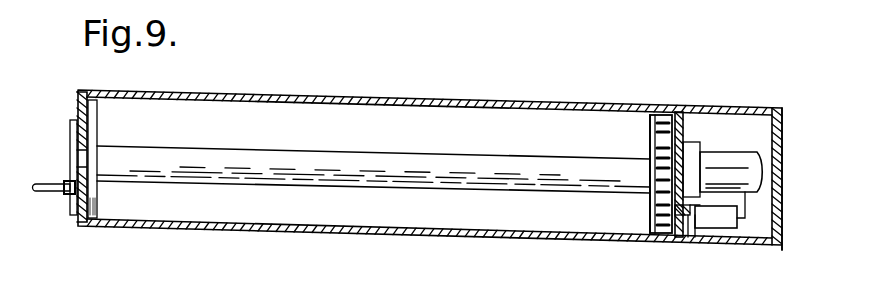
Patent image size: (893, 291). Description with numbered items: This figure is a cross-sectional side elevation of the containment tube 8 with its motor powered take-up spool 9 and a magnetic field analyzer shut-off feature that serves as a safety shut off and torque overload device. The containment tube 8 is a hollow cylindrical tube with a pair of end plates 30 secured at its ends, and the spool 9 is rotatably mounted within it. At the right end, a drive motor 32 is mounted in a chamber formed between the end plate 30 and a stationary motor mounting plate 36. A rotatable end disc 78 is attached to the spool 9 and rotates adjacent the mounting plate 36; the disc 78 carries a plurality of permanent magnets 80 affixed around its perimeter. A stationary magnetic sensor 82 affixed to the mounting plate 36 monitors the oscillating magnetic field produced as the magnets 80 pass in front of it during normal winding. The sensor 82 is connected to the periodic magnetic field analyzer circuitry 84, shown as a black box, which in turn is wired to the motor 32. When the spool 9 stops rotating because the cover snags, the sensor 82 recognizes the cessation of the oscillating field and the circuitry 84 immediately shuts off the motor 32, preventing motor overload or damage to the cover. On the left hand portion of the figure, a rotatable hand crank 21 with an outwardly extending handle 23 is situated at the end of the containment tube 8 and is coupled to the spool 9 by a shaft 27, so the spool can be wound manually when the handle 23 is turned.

The containment tube 8 is at (487, 99).
The take-up spool 9 is at (383, 155).
The hand crank 21 is at (69, 138).
The handle 23 is at (42, 183).
The shaft 27 is at (90, 157).
The end plate 30 is at (77, 207).
The drive motor 32 is at (742, 133).
The motor mounting plate 36 is at (684, 130).
The rotatable end disc 78 is at (650, 142).
The permanent magnets 80 is at (661, 115).
The magnetic sensor 82 is at (690, 237).
The periodic magnetic field analyzer circuitry 84 is at (723, 225).